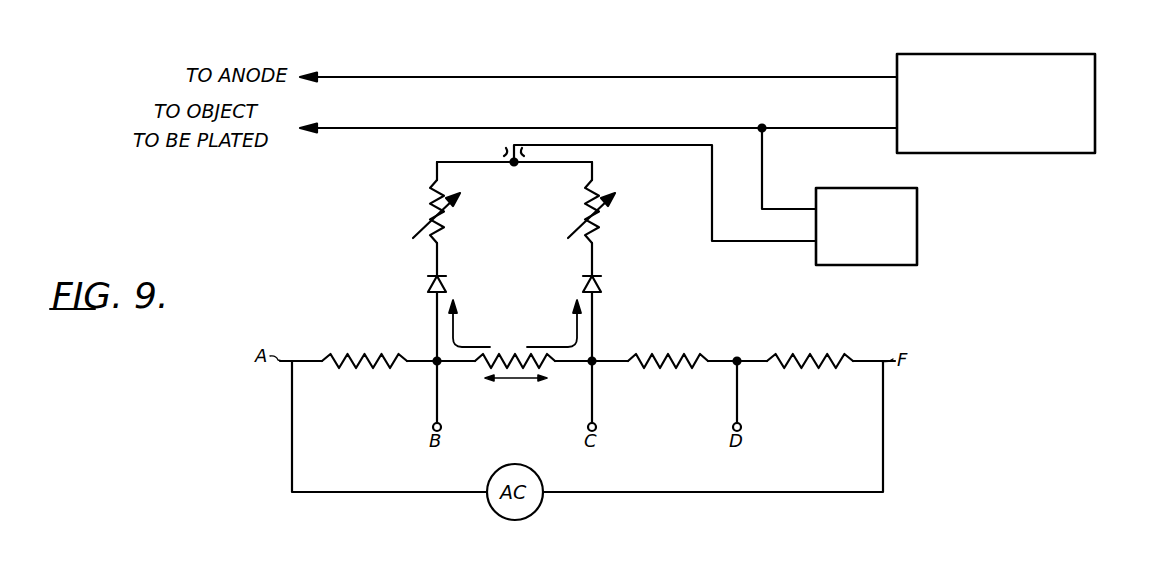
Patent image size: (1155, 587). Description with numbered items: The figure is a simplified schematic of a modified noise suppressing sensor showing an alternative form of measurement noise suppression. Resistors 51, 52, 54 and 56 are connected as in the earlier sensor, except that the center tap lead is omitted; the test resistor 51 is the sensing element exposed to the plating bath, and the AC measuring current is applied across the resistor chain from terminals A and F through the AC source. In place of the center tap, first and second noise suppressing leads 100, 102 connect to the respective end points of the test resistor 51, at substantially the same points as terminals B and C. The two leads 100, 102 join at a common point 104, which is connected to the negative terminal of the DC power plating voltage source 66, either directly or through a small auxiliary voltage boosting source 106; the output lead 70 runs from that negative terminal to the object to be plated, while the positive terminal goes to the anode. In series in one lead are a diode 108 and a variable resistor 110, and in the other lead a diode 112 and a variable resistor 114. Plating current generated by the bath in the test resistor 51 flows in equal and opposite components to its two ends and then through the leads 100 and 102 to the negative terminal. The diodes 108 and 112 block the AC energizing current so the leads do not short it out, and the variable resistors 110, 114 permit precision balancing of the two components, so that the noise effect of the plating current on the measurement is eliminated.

The test resistor 51 is at (478, 366).
The resistor 52 is at (666, 357).
The resistor 54 is at (356, 355).
The resistor 56 is at (800, 357).
The DC power plating voltage source 66 is at (1095, 86).
The lead to object to be plated 70 is at (464, 126).
The first noise suppressing lead 100 is at (436, 310).
The second noise suppressing lead 102 is at (593, 312).
The common point 104 is at (514, 167).
The auxiliary voltage boosting source 106 is at (917, 213).
The diode 108 is at (427, 278).
The variable resistor 110 is at (428, 210).
The diode 112 is at (602, 278).
The variable resistor 114 is at (602, 224).